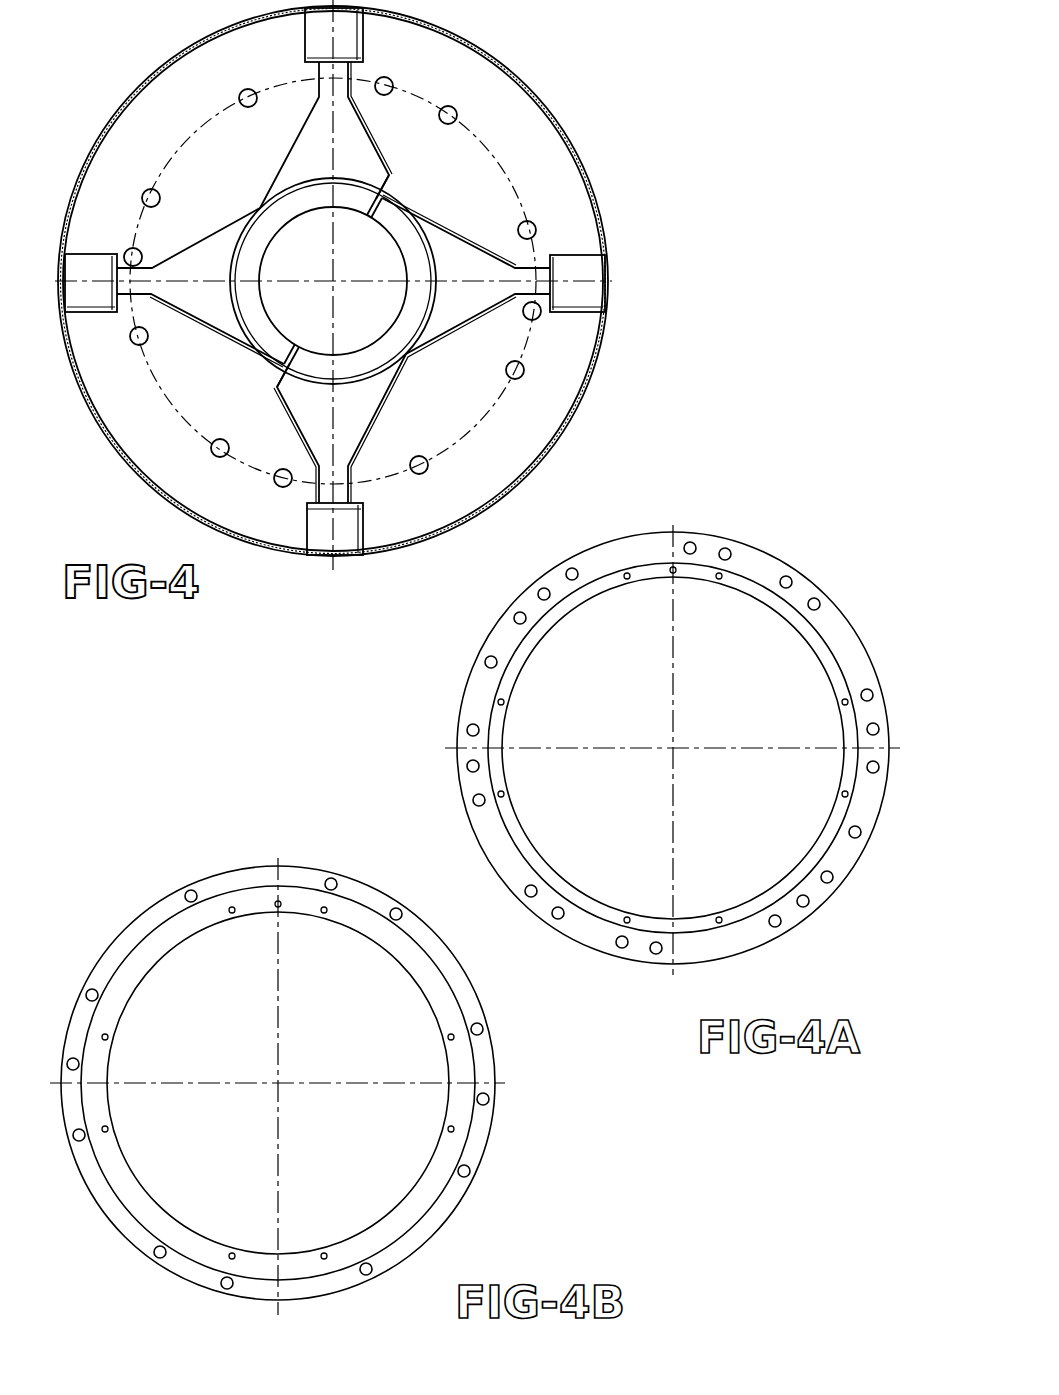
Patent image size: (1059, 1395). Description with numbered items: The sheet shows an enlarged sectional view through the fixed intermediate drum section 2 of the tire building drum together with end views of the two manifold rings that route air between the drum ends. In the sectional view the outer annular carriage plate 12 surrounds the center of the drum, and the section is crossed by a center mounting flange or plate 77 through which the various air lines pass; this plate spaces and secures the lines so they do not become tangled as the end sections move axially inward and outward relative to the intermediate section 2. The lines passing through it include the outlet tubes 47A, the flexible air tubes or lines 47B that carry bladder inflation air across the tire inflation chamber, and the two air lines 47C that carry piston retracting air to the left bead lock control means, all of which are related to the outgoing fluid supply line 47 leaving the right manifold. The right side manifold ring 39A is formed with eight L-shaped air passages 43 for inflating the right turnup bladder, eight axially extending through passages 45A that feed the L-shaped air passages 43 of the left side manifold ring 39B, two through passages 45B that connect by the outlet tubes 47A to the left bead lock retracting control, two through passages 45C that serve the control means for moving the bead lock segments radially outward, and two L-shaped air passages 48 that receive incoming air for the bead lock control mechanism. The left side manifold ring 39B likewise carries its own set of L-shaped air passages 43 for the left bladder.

In FIG. 4, the fixed intermediate drum section 2 is at (587, 164).
In FIG. 4, the annular carriage plate 12 is at (276, 353).
In FIG. 4, the outgoing fluid supply line 47 is at (127, 251).
In FIG. 4, the outlet tubes 47A is at (240, 93).
In FIG. 4, the air tubes or lines 47B is at (391, 80).
In FIG. 4, the air lines 47C is at (540, 314).
In FIG. 4, the center mounting flange or plate 77 is at (384, 510).
In FIG. 4A, the right side manifold ring 39A is at (762, 564).
In FIG. 4B, the left side manifold ring 39B is at (121, 930).
In FIG. 4A, the L-shaped air passages 43 is at (690, 542).
In FIG. 4B, the L-shaped air passages 43 is at (188, 891).
In FIG. 4A, the through passages 45A is at (727, 548).
In FIG. 4A, the through passages 45B is at (790, 576).
In FIG. 4B, the through passages 45B is at (399, 908).
In FIG. 4A, the through passages 45C is at (467, 730).
In FIG. 4B, the through passages 45C is at (79, 1062).
In FIG. 4A, the L-shaped air passages 48 is at (514, 615).